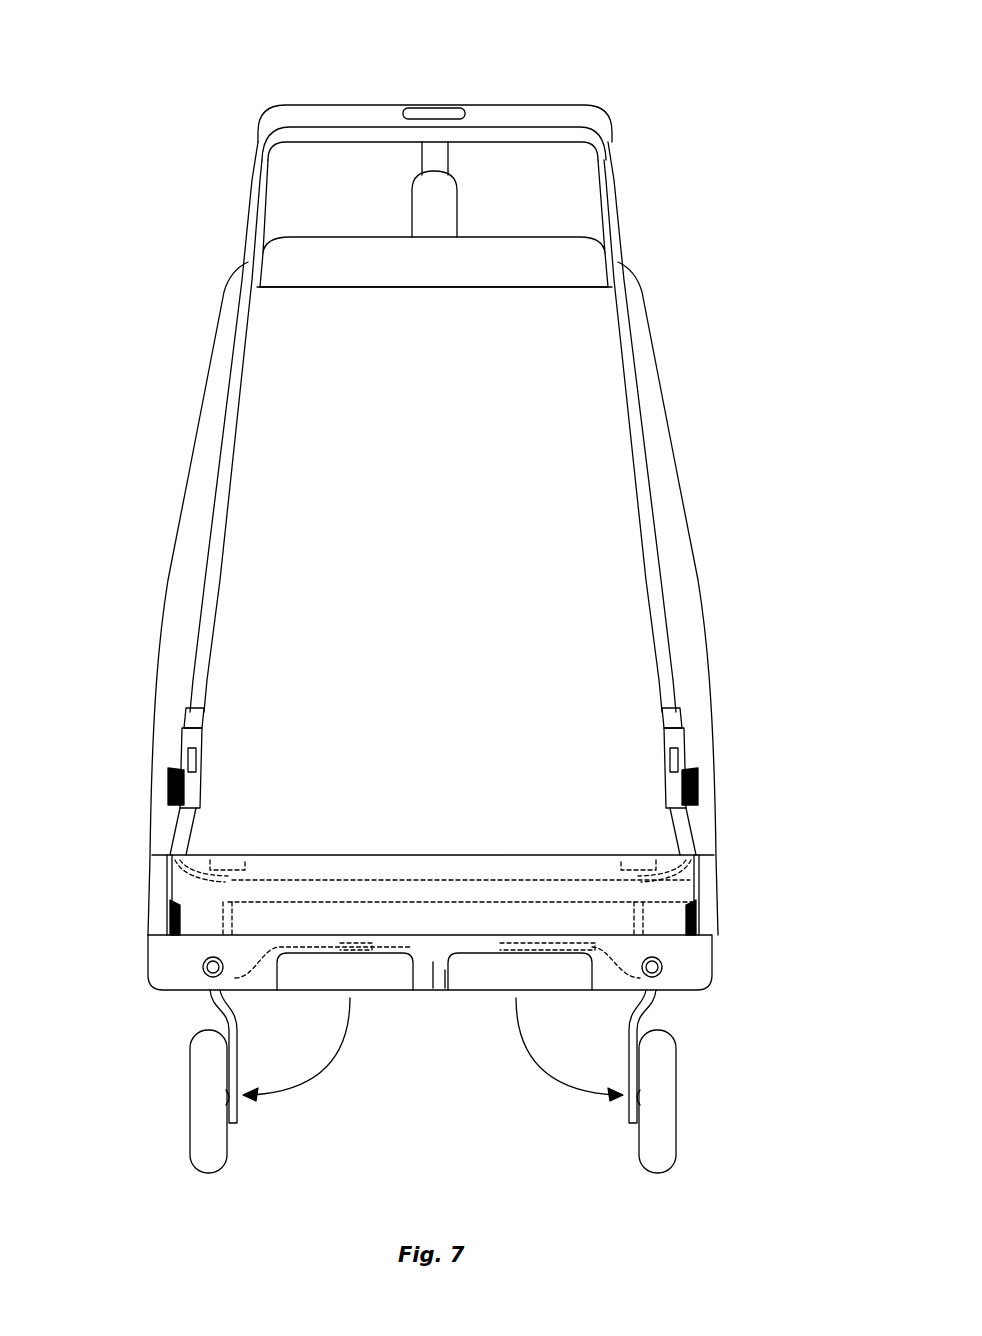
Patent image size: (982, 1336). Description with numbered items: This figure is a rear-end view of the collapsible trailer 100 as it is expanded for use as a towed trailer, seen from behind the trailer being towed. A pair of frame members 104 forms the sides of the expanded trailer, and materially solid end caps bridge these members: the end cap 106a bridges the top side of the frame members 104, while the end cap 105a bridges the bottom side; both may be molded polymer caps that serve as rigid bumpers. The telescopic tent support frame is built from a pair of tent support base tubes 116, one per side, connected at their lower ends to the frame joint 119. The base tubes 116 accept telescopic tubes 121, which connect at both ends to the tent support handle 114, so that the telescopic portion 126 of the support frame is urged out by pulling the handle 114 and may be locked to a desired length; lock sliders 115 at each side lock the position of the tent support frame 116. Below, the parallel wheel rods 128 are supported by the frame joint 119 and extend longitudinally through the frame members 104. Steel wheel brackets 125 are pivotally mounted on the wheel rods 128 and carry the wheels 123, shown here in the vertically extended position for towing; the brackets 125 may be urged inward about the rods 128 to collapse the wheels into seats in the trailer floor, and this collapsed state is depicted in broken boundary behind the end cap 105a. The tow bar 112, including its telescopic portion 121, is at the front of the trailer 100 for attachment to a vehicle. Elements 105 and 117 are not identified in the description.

The collapsible trailer 100 is at (178, 146).
The frame members 104 is at (199, 488).
The base 105 is at (152, 885).
The end cap 105a is at (432, 993).
The end cap 106a is at (355, 235).
The tow bar 112 is at (410, 222).
The tent support handle 114 is at (509, 117).
The lock sliders 115 is at (205, 750).
The tent support base tubes 116 is at (225, 585).
The right hinge 117 is at (690, 920).
The frame joint 119 is at (428, 880).
The telescopic tubes 121 is at (450, 158).
The wheels 123 is at (190, 1098).
The wheel brackets 125 is at (655, 1005).
The telescopic portion 126 is at (630, 345).
The wheel rods 128 is at (207, 958).